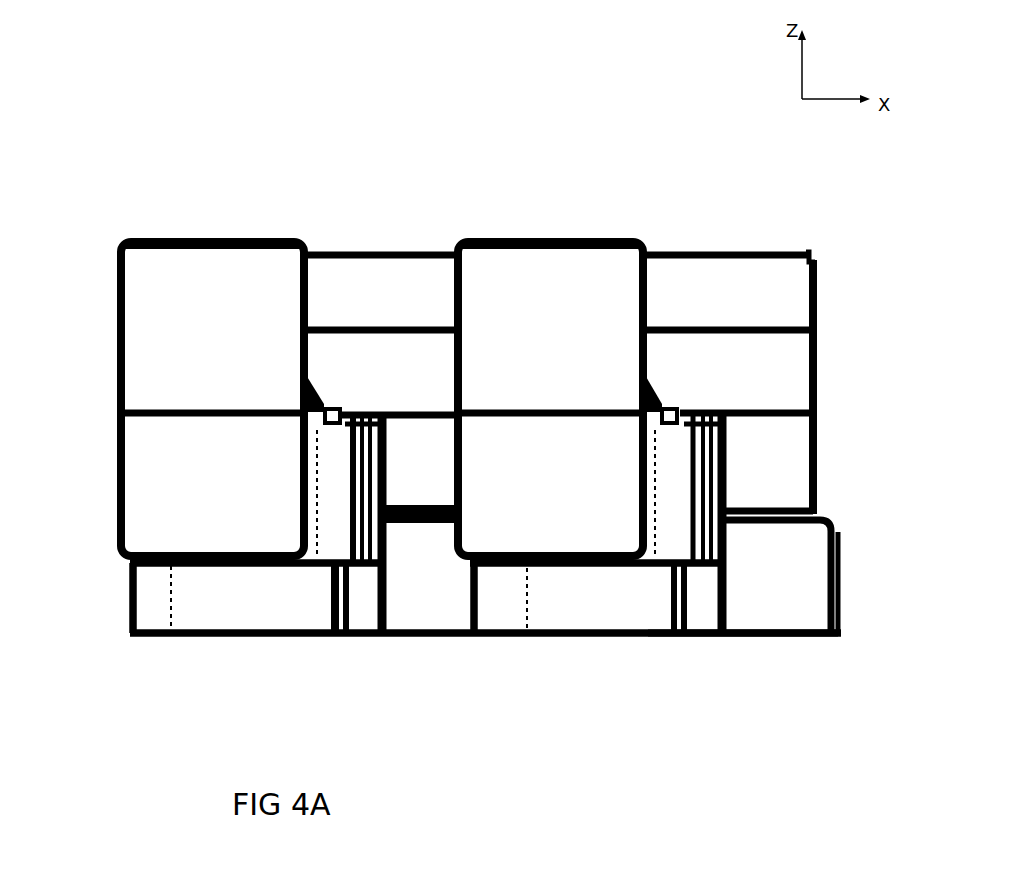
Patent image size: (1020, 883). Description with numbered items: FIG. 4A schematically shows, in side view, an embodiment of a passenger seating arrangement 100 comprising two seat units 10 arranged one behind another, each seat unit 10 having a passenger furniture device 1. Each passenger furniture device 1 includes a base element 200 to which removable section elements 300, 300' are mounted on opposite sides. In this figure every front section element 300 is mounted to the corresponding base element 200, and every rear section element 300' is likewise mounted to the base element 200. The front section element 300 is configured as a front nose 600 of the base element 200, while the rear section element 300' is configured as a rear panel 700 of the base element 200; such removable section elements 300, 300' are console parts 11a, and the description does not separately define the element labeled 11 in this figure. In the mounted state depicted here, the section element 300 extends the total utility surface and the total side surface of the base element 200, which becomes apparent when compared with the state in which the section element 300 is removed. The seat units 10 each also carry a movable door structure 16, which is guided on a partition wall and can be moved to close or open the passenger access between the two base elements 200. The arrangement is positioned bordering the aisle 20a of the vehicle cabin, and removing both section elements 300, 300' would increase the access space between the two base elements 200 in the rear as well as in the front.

The passenger seating arrangement 100 is at (163, 186).
The seat unit 10 is at (280, 220).
The door structure 16 is at (208, 258).
The passenger furniture device 1 is at (437, 378).
The front nose 600 is at (359, 398).
The base plate 11 is at (249, 612).
The console part 11a is at (148, 578).
The section element 300 is at (468, 576).
The rear section element 300' is at (290, 611).
The rear panel 700 is at (152, 652).
The base element 200 is at (233, 620).
The aisle 20a is at (830, 670).